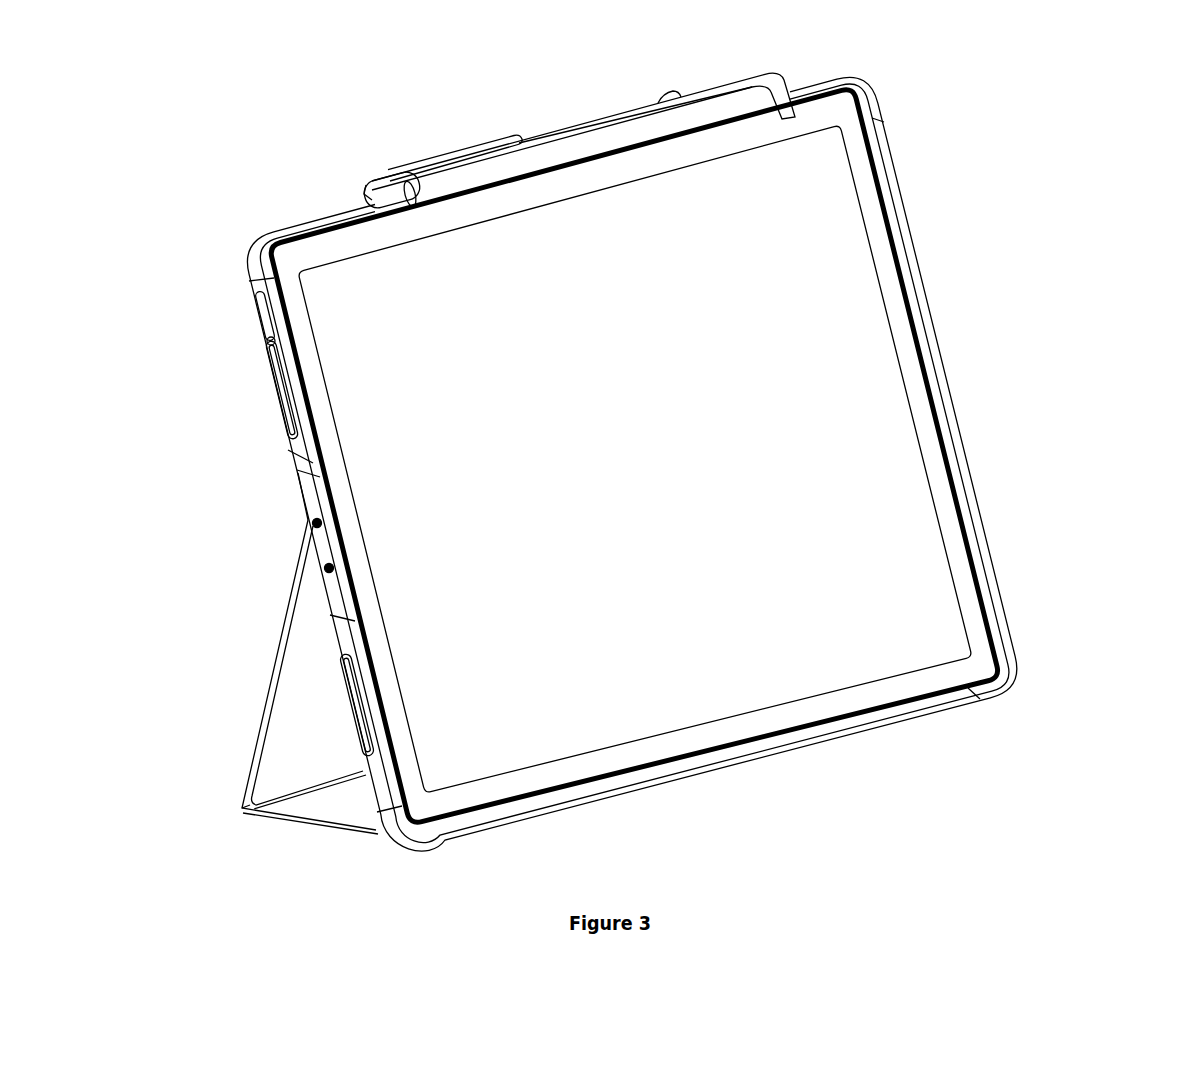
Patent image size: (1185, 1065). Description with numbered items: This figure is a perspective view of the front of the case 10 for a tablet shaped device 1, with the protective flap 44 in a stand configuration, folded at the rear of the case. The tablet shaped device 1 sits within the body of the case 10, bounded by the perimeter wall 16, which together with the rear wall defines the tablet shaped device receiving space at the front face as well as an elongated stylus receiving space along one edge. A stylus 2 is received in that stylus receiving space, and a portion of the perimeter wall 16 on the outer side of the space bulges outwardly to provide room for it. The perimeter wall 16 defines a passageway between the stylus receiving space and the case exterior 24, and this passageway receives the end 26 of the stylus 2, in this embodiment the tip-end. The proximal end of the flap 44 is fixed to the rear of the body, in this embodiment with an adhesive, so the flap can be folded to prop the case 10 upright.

The case 10 is at (1113, 79).
The tablet shaped device 1 is at (603, 485).
The stylus 2 is at (720, 105).
The perimeter wall 16 is at (258, 266).
The case exterior 24 is at (293, 142).
The end of the stylus 26 is at (368, 191).
The flap 44 is at (336, 717).